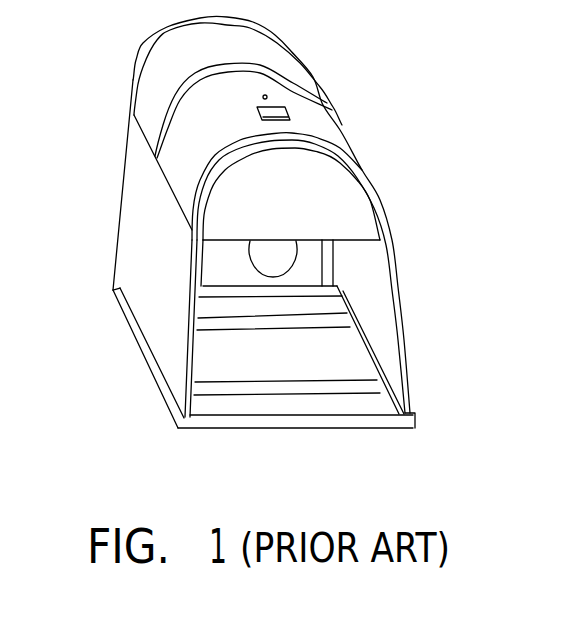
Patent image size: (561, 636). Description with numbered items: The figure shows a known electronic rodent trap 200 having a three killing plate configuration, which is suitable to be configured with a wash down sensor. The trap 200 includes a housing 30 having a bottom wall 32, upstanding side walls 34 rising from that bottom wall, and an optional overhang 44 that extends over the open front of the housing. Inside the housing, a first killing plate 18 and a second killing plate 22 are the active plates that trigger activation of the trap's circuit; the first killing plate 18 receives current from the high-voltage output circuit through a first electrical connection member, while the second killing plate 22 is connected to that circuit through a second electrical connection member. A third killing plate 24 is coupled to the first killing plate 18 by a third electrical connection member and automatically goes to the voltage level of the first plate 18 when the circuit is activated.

The electronic rodent trap 200 is at (352, 94).
The housing 30 is at (138, 72).
The upstanding side walls 34 is at (130, 180).
The overhang 44 is at (342, 190).
The first killing plate 18 is at (243, 307).
The second killing plate 22 is at (300, 369).
The third killing plate 24 is at (363, 403).
The bottom wall 32 is at (407, 417).